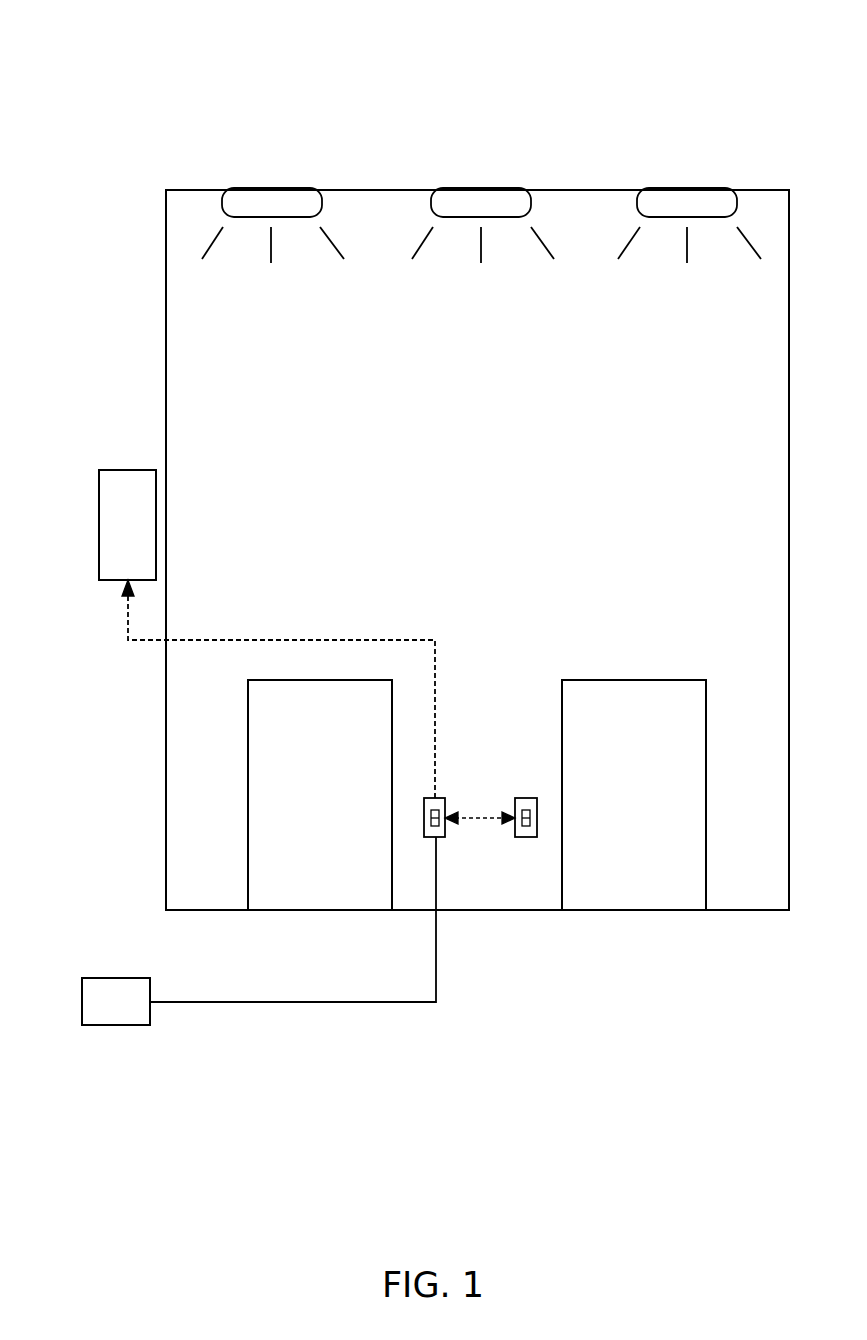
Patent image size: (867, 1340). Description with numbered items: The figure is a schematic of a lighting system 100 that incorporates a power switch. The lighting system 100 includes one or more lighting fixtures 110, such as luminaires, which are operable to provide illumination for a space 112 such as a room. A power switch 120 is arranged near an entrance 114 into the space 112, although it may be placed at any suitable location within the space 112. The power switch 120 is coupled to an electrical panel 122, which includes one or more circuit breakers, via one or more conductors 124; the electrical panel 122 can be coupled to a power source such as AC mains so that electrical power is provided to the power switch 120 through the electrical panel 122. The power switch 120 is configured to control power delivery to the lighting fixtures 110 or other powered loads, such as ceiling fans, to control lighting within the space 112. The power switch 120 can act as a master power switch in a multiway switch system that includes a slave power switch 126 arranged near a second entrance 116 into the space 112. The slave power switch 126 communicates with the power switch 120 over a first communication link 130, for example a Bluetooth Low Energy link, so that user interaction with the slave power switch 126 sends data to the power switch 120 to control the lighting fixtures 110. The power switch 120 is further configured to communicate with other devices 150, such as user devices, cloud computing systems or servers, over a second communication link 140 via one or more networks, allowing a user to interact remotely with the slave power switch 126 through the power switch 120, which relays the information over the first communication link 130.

The lighting system 100 is at (592, 90).
The lighting fixtures 110 is at (287, 190).
The space 112 is at (664, 456).
The entrance 114 is at (342, 876).
The entrance 116 is at (640, 877).
The power switch 120 is at (447, 800).
The electrical panel 122 is at (95, 1014).
The conductors 124 is at (328, 1002).
The slave power switch 126 is at (532, 798).
The first communication link 130 is at (482, 822).
The second communication link 140 is at (312, 640).
The other devices 150 is at (107, 536).